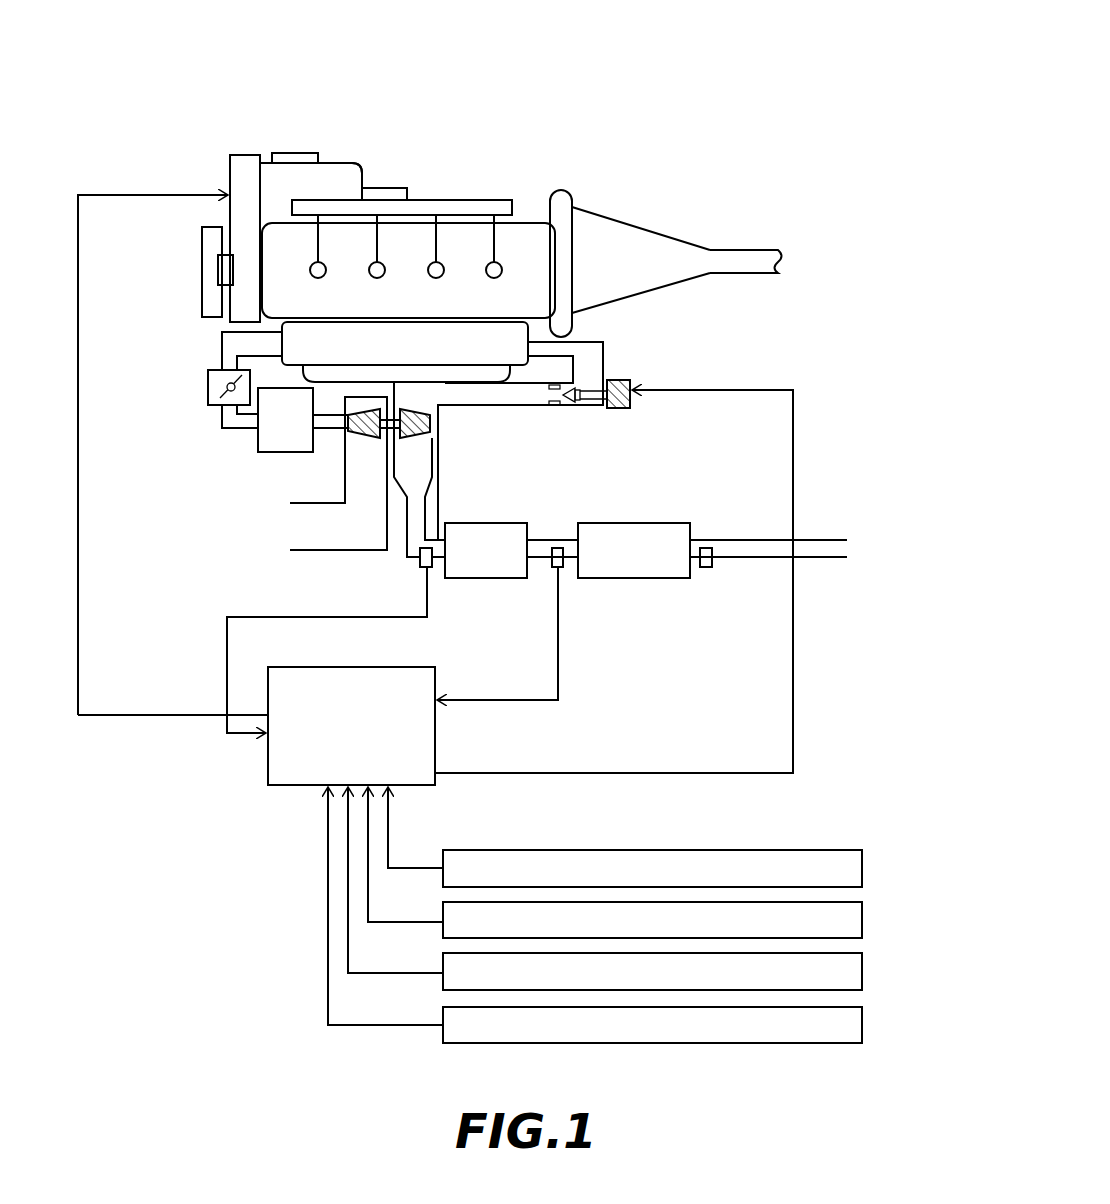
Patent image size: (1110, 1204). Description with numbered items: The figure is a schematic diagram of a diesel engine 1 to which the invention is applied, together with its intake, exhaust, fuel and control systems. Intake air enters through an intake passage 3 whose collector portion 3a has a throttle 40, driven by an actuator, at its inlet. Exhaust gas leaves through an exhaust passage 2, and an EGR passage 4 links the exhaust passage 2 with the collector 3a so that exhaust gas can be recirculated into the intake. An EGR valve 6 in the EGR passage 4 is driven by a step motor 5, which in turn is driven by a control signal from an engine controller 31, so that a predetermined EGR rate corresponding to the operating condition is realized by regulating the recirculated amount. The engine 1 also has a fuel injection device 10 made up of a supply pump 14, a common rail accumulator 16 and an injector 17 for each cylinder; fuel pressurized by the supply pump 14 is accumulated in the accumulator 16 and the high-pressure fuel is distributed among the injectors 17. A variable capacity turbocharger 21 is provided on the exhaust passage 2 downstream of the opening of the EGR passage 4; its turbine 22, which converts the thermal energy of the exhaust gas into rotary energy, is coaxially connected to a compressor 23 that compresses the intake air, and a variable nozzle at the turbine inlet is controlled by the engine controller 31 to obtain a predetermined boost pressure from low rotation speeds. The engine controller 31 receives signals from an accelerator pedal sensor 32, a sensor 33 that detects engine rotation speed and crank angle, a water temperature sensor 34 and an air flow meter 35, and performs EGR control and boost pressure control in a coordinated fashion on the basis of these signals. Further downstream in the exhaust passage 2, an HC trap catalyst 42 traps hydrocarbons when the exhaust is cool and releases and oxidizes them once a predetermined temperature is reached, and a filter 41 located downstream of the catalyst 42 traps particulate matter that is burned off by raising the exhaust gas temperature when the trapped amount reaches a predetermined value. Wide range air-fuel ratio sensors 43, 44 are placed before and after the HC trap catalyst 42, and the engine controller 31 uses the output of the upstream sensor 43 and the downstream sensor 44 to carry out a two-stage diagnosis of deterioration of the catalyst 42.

The diesel engine 1 is at (516, 188).
The fuel injection device 10 is at (446, 161).
The supply pump 14 is at (333, 163).
The common rail (accumulator) 16 is at (423, 200).
The injector 17 is at (491, 261).
The exhaust passage 2 is at (432, 507).
The intake passage 3 is at (220, 348).
The collector portion 3a is at (513, 338).
The EGR passage 4 is at (605, 355).
The step motor 5 is at (620, 410).
The EGR valve 6 is at (570, 404).
The variable capacity turbocharger 21 is at (340, 440).
The turbine 22 is at (420, 438).
The compressor 23 is at (363, 440).
The engine controller 31 is at (390, 667).
The accelerator pedal sensor 32 is at (863, 867).
The engine rotation speed sensor 33 is at (863, 920).
The water temperature sensor 34 is at (863, 970).
The air flow meter 35 is at (863, 1023).
The throttle 40 is at (208, 387).
The filter 41 is at (663, 523).
The HC trap catalyst 42 is at (507, 523).
The wide range air-fuel ratio sensor 43 is at (420, 562).
The wide range air-fuel ratio sensor 44 is at (550, 567).